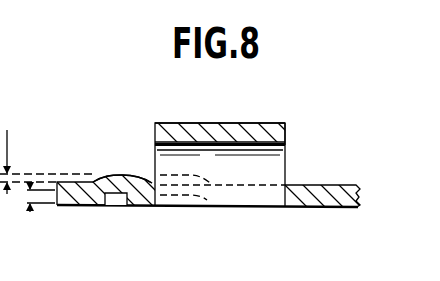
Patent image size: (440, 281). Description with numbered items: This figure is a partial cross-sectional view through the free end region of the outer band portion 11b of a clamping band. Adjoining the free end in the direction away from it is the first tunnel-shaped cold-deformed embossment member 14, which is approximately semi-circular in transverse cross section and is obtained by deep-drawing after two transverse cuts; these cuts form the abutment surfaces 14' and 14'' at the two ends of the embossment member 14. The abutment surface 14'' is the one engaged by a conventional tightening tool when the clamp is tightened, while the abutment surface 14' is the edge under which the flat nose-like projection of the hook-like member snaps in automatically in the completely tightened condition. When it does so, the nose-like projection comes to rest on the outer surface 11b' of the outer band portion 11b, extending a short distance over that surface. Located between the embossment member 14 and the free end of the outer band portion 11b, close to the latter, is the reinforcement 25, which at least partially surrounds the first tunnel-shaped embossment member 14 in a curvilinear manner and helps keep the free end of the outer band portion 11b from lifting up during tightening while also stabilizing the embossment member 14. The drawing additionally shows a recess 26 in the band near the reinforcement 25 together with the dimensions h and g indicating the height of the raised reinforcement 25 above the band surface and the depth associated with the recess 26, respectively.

The first tunnel-shaped cold-deformed embossment member 14 is at (220, 142).
The abutment surface 14' is at (222, 113).
The abutment surface 14'' is at (309, 111).
The outer band portion 11b is at (219, 213).
The outer surface of the outer band portion 11b' is at (107, 156).
The reinforcement 25 is at (104, 171).
The recess in base plate 26 is at (119, 206).
The bump height dimension h is at (46, 160).
The gap dimension g is at (35, 212).